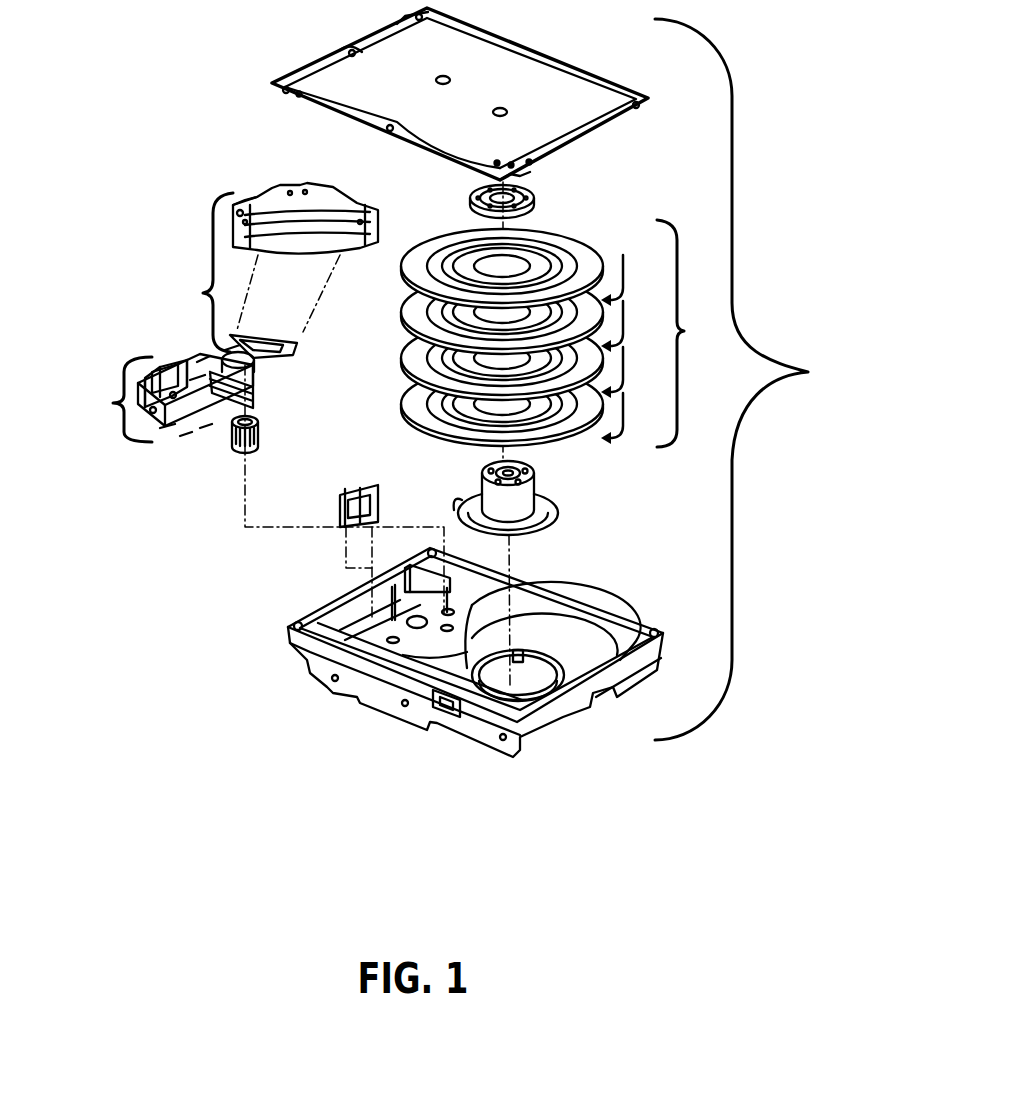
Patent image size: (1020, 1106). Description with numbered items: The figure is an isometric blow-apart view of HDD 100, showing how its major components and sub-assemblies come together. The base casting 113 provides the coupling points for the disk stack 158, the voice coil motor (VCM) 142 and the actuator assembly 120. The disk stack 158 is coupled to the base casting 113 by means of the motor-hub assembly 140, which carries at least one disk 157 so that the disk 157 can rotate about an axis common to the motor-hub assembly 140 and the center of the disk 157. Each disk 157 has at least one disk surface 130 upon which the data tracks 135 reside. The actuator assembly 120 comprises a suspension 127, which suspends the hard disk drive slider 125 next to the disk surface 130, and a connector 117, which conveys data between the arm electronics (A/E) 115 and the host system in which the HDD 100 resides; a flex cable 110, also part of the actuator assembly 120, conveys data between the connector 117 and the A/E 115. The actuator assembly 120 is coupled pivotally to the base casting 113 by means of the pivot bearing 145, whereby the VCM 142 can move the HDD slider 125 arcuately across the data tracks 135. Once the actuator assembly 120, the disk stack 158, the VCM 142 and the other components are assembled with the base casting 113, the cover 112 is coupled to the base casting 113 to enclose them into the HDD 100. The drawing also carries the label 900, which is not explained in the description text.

The HDD 100 is at (809, 362).
The cover 112 is at (546, 98).
The base casting 113 is at (306, 652).
The disk surface 130 is at (596, 408).
The data tracks 135 is at (458, 242).
The motor-hub assembly 140 is at (558, 503).
The voice coil motor (VCM) 142 is at (213, 292).
The pivot bearing 145 is at (243, 452).
The disk 157 is at (405, 260).
The disk stack 158 is at (680, 331).
The flex cable 110 is at (203, 351).
The arm electronics (A/E) 115 is at (238, 352).
The connector 117 is at (202, 383).
The actuator assembly 120 is at (161, 398).
The hard disk drive slider 125 is at (165, 430).
The suspension 127 is at (205, 425).
The damper embodiment 900 is at (184, 437).